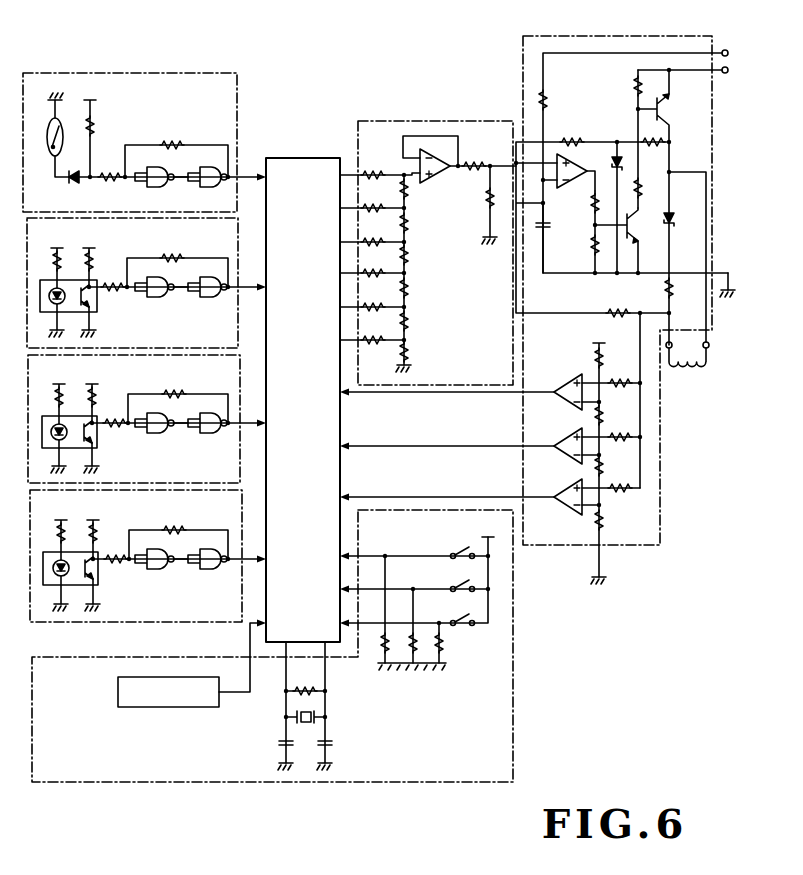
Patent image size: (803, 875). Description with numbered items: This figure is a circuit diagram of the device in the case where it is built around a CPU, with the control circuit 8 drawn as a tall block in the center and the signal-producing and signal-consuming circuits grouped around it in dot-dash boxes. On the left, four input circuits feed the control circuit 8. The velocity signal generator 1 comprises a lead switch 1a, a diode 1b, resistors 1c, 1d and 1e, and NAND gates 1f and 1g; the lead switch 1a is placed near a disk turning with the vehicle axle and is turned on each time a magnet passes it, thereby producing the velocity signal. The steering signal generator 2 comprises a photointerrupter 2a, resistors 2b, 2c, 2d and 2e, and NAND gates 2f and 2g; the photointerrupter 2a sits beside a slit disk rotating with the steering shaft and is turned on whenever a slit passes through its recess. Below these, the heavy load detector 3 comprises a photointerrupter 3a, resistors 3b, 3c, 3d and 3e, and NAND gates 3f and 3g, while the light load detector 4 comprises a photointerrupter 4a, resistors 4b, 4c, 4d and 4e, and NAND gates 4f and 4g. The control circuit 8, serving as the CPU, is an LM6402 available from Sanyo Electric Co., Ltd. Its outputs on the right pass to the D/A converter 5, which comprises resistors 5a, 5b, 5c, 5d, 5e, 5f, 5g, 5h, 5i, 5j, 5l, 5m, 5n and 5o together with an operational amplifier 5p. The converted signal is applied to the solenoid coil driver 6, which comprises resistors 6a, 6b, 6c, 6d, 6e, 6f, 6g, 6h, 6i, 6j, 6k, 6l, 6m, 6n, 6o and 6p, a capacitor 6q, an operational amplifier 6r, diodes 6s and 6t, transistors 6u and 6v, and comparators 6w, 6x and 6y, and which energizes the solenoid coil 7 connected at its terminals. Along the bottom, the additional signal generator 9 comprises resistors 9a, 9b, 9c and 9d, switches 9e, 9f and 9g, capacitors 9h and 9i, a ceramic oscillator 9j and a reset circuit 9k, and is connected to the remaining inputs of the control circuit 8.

The velocity signal generator 1 is at (238, 90).
The lead switch 1a is at (63, 126).
The diode 1b is at (73, 168).
The resistor 1c is at (94, 112).
The resistor 1d is at (111, 166).
The resistor 1e is at (170, 140).
The NAND gate 1f is at (152, 186).
The NAND gate 1g is at (205, 186).
The steering signal generator 2 is at (25, 250).
The photointerrupter 2a is at (97, 314).
The resistor 2b is at (53, 262).
The resistor 2c is at (95, 263).
The resistor 2d is at (116, 294).
The resistor 2e is at (176, 254).
The NAND gate 2f is at (157, 298).
The NAND gate 2g is at (208, 298).
The heavy load detector 3 is at (25, 386).
The photointerrupter 3a is at (97, 450).
The resistor 3b is at (55, 398).
The resistor 3c is at (97, 399).
The resistor 3d is at (116, 430).
The resistor 3e is at (180, 390).
The NAND gate 3f is at (157, 436).
The NAND gate 3g is at (206, 436).
The light load detector 4 is at (25, 522).
The photointerrupter 4a is at (100, 586).
The resistor 4b is at (55, 536).
The resistor 4c is at (97, 535).
The resistor 4d is at (116, 566).
The resistor 4e is at (174, 528).
The NAND gate 4f is at (157, 576).
The NAND gate 4g is at (206, 576).
The D/A converter 5 is at (491, 121).
The resistor 5a is at (376, 170).
The resistor 5b is at (376, 204).
The resistor 5c is at (376, 238).
The resistor 5d is at (376, 270).
The resistor 5e is at (376, 304).
The resistor 5f is at (376, 336).
The resistor 5g is at (410, 190).
The resistor 5h is at (410, 223).
The resistor 5i is at (410, 255).
The resistor 5j is at (410, 288).
The resistor 5l is at (410, 321).
The resistor 5m is at (410, 352).
The resistor 5n is at (473, 172).
The resistor 5o is at (484, 208).
The operational amplifier 5p is at (443, 160).
The solenoid coil driver 6 is at (688, 36).
The resistor 6a is at (546, 107).
The resistor 6b is at (571, 136).
The resistor 6c is at (593, 204).
The resistor 6d is at (592, 246).
The resistor 6e is at (633, 87).
The resistor 6f is at (656, 146).
The resistor 6g is at (642, 192).
The resistor 6h is at (674, 292).
The resistor 6i is at (619, 309).
The resistor 6j is at (606, 360).
The resistor 6k is at (620, 380).
The resistor 6l is at (622, 434).
The resistor 6m is at (603, 419).
The resistor 6n is at (603, 470).
The resistor 6o is at (620, 490).
The resistor 6p is at (605, 523).
The capacitor 6q is at (538, 228).
The operational amplifier 6r is at (569, 187).
The diode 6s is at (609, 160).
The diode 6t is at (674, 216).
The transistor 6u is at (639, 227).
The transistor 6v is at (671, 107).
The comparator 6w is at (570, 378).
The comparator 6x is at (570, 434).
The comparator 6y is at (570, 485).
The solenoid coil 7 is at (688, 368).
The control circuit 8 is at (324, 156).
The additional signal generator 9 is at (50, 782).
The resistor 9a is at (445, 646).
The resistor 9b is at (417, 650).
The resistor 9c is at (380, 650).
The resistor 9d is at (299, 686).
The switch 9e is at (452, 541).
The switch 9f is at (454, 573).
The switch 9g is at (454, 606).
The capacitor 9h is at (278, 743).
The capacitor 9i is at (332, 744).
The ceramic oscillator 9j is at (306, 724).
The reset circuit 9k is at (139, 708).